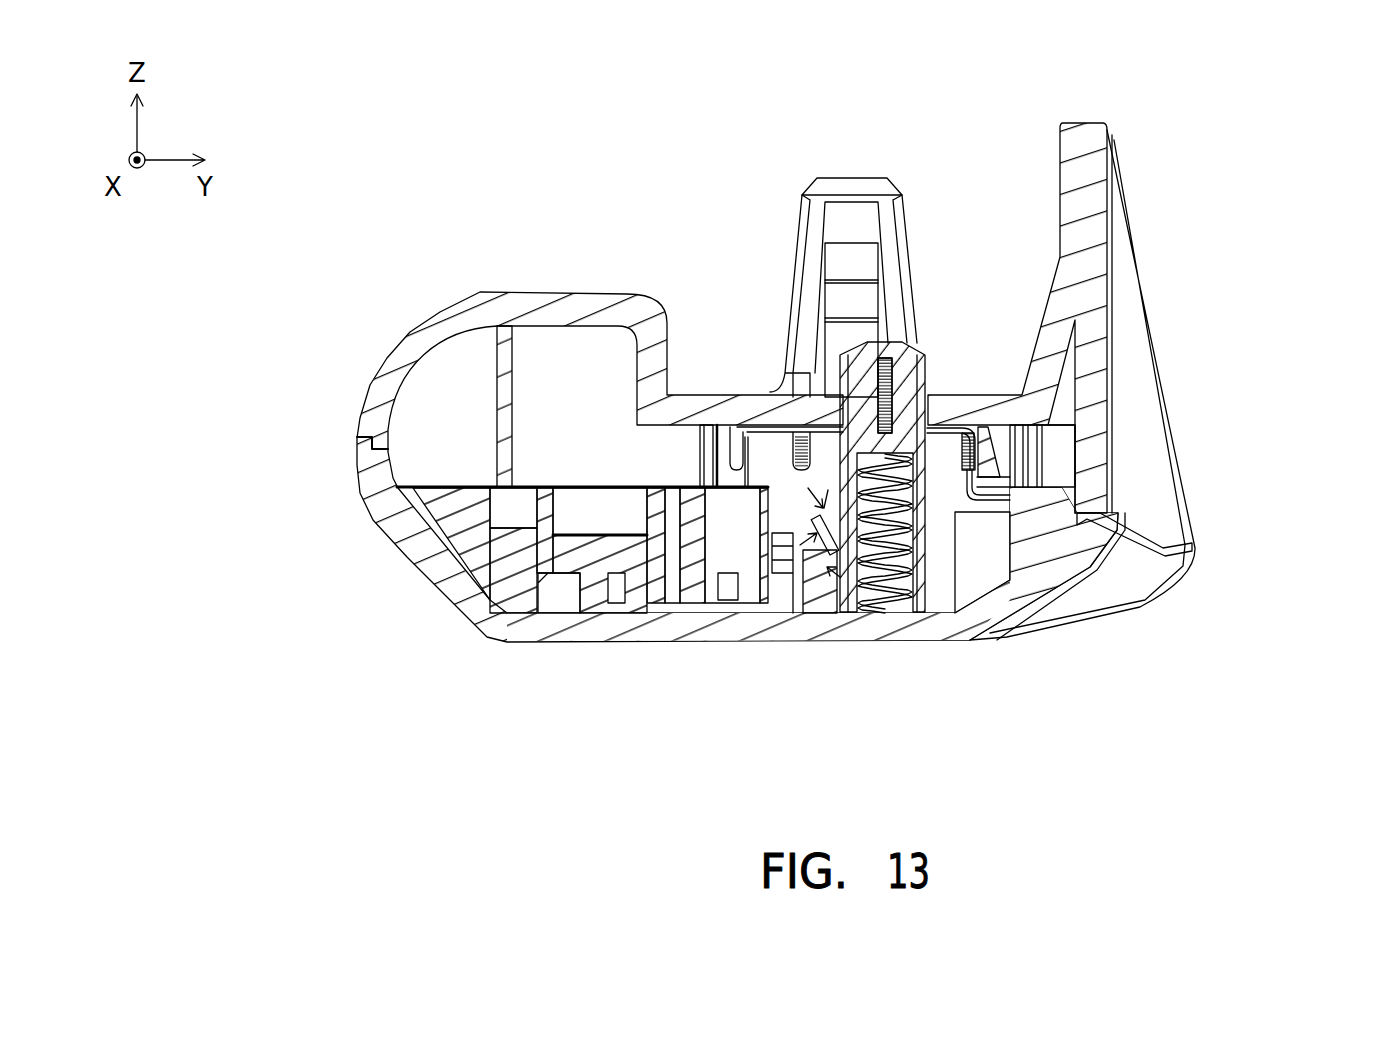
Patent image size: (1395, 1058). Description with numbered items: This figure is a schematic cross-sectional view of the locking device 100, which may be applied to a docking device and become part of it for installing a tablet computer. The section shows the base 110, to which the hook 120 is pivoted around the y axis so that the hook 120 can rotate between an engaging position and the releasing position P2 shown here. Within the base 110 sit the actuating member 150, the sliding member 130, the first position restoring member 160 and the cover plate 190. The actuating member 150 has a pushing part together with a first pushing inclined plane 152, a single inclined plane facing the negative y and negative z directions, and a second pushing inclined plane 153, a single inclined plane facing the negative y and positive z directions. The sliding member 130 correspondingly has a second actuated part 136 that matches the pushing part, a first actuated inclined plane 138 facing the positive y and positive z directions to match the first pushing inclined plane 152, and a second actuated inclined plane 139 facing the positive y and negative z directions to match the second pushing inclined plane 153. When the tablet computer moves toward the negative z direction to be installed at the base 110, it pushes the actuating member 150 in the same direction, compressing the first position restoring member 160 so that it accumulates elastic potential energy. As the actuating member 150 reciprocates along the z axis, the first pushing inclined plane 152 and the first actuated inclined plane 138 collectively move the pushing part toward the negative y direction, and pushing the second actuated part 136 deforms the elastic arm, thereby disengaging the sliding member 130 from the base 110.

The locking device 100 is at (1394, 694).
The base 110 is at (1093, 232).
The hook 120 is at (857, 258).
The sliding member 130 is at (597, 553).
The second actuated part 136 is at (801, 593).
The first actuated inclined plane 138 is at (838, 528).
The second actuated inclined plane 139 is at (839, 578).
The actuating member 150 is at (913, 367).
The first pushing inclined plane 152 is at (799, 546).
The second pushing inclined plane 153 is at (821, 506).
The first position restoring member 160 is at (893, 598).
The cover plate 190 is at (941, 428).
The releasing position P2 is at (862, 207).